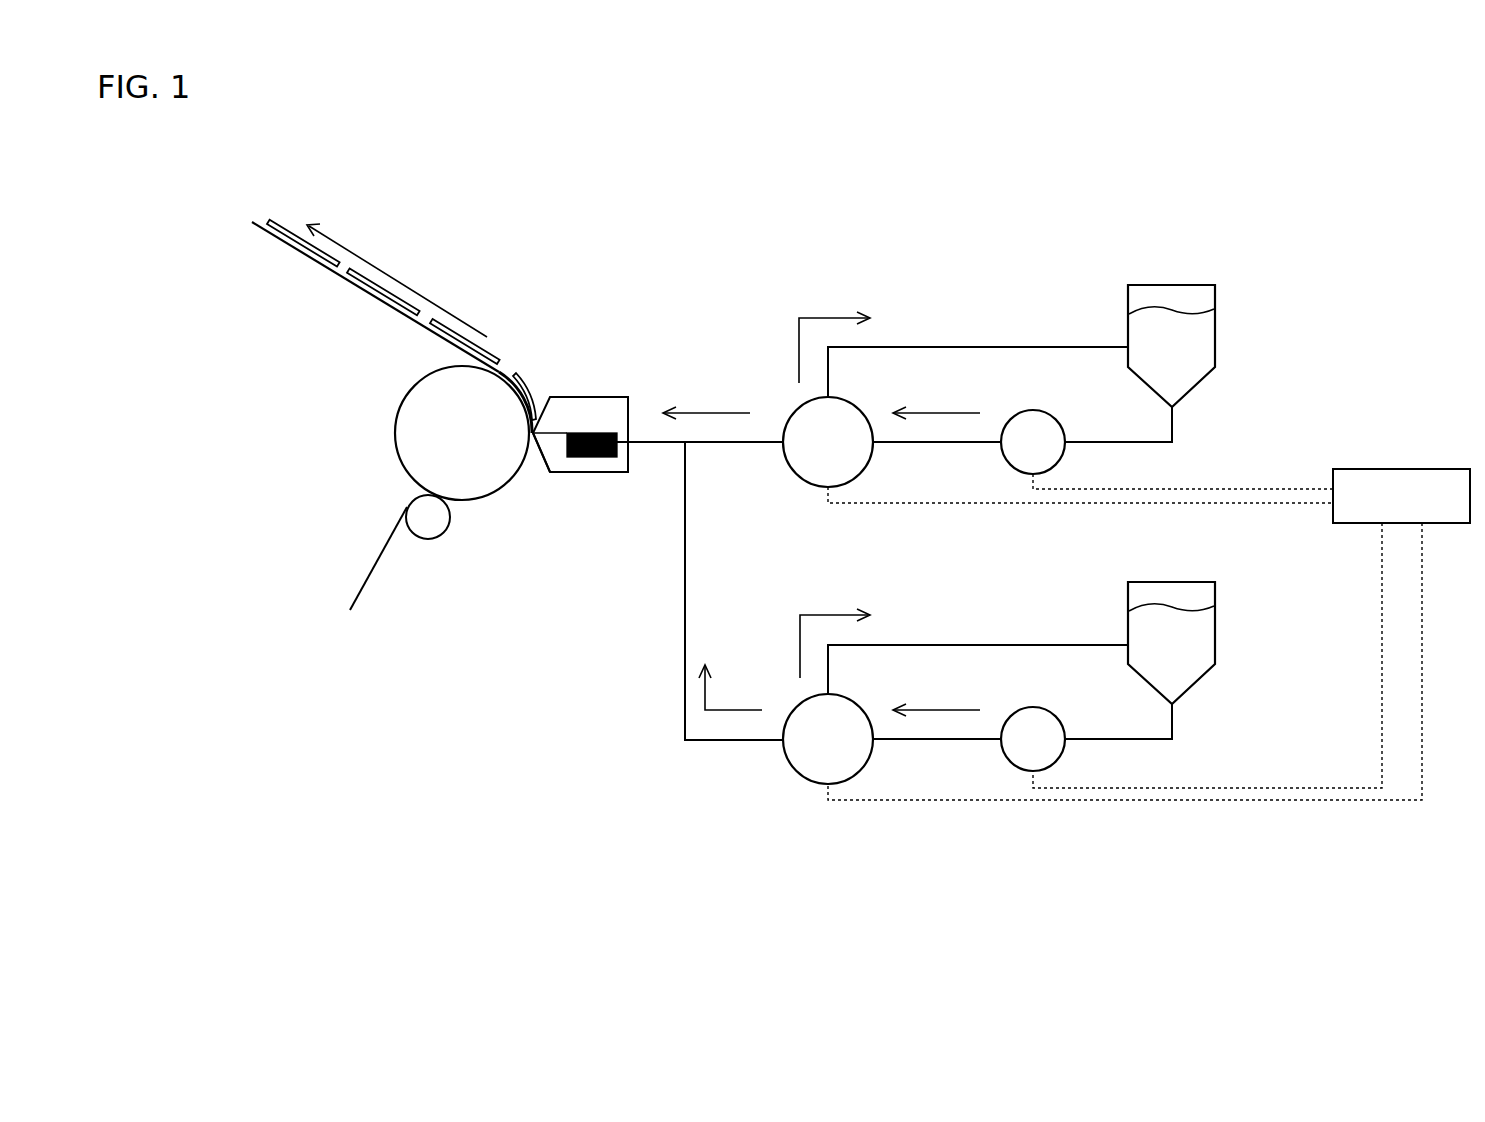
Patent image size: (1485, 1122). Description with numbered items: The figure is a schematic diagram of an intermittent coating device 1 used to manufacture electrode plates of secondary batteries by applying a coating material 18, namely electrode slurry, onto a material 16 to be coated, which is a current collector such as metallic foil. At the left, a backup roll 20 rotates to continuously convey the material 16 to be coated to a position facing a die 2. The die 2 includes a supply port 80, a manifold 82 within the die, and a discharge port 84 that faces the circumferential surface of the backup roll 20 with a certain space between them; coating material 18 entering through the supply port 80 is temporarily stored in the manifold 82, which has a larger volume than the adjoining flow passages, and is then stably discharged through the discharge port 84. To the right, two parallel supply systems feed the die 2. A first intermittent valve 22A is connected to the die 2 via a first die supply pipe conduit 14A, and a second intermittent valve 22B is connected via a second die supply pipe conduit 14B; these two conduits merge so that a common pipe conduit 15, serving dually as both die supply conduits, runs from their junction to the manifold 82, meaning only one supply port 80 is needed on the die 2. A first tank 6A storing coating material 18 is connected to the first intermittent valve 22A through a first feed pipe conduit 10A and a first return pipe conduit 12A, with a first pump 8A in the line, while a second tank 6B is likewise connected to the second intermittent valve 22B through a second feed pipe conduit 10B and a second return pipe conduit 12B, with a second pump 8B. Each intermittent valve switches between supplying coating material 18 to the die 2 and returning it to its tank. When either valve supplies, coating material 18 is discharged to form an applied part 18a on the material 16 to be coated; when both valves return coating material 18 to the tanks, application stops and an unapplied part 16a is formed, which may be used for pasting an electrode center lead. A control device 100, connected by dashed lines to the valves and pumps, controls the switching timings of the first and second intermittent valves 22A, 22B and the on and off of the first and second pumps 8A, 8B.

The intermittent coating device 1 is at (767, 880).
The die 2 is at (606, 388).
The first tank 6A is at (1216, 337).
The second tank 6B is at (1216, 634).
The first pump 8A is at (1040, 410).
The second pump 8B is at (1040, 708).
The first feed pipe conduit 10A is at (1108, 441).
The second feed pipe conduit 10B is at (1108, 738).
The first return pipe conduit 12A is at (997, 346).
The second return pipe conduit 12B is at (997, 644).
The first die supply pipe conduit 14A is at (729, 444).
The second die supply pipe conduit 14B is at (729, 742).
The common pipe conduit 15 is at (650, 448).
The material to be coated 16 is at (368, 575).
The unapplied part 16a is at (339, 275).
The coating material 18 is at (1192, 308).
The applied part 18a is at (294, 250).
The backup roll 20 is at (410, 437).
The first intermittent valve 22A is at (877, 383).
The second intermittent valve 22B is at (877, 682).
The supply port 80 is at (633, 442).
The manifold 82 is at (587, 458).
The discharge port 84 is at (538, 449).
The control device 100 is at (1431, 458).